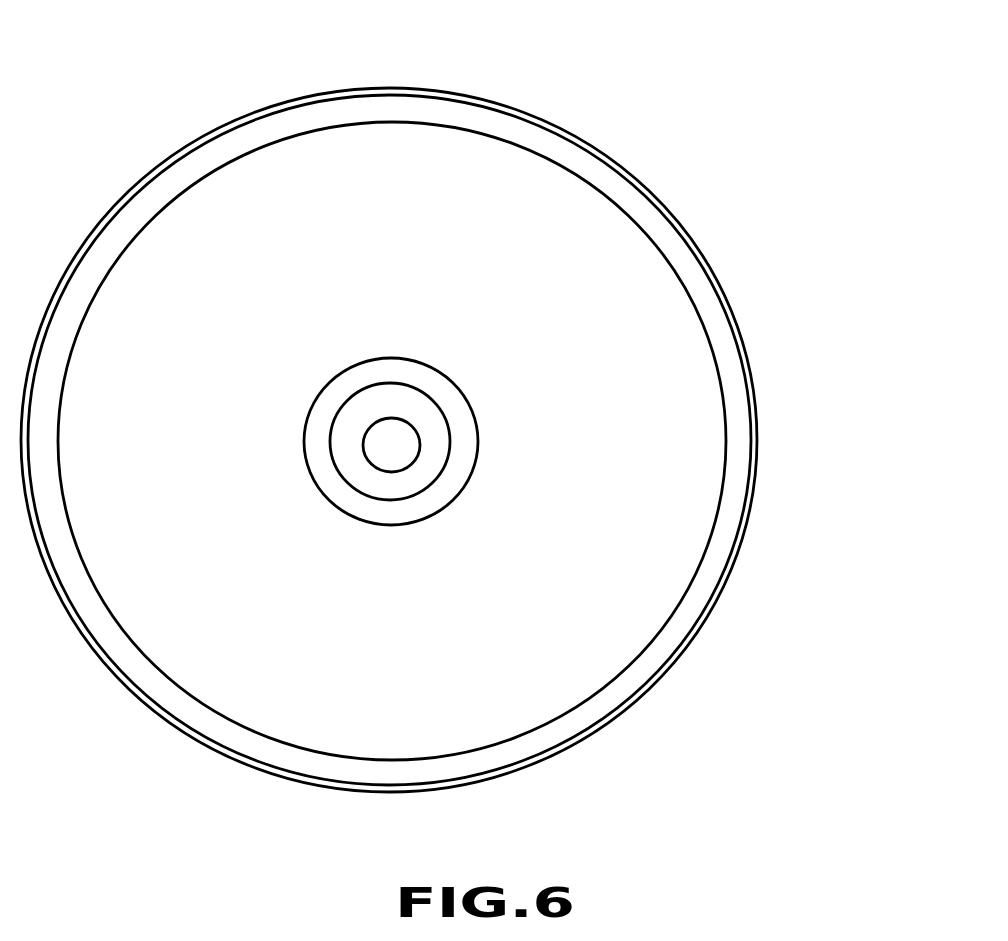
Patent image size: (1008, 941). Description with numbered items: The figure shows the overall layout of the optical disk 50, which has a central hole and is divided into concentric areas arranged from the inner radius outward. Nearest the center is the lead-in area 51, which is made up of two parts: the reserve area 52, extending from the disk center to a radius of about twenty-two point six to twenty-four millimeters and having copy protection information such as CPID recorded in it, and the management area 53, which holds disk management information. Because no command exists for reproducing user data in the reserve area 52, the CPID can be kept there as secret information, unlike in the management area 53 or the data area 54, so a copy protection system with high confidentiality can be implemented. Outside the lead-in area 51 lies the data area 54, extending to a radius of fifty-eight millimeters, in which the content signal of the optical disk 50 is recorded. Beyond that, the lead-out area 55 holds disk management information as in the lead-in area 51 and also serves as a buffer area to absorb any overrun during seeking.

The optical disk 50 is at (559, 88).
The lead-in area 51 is at (617, 435).
The reserve area 52 is at (425, 420).
The management area 53 is at (463, 450).
The data area 54 is at (657, 497).
The lead-out area 55 is at (713, 560).